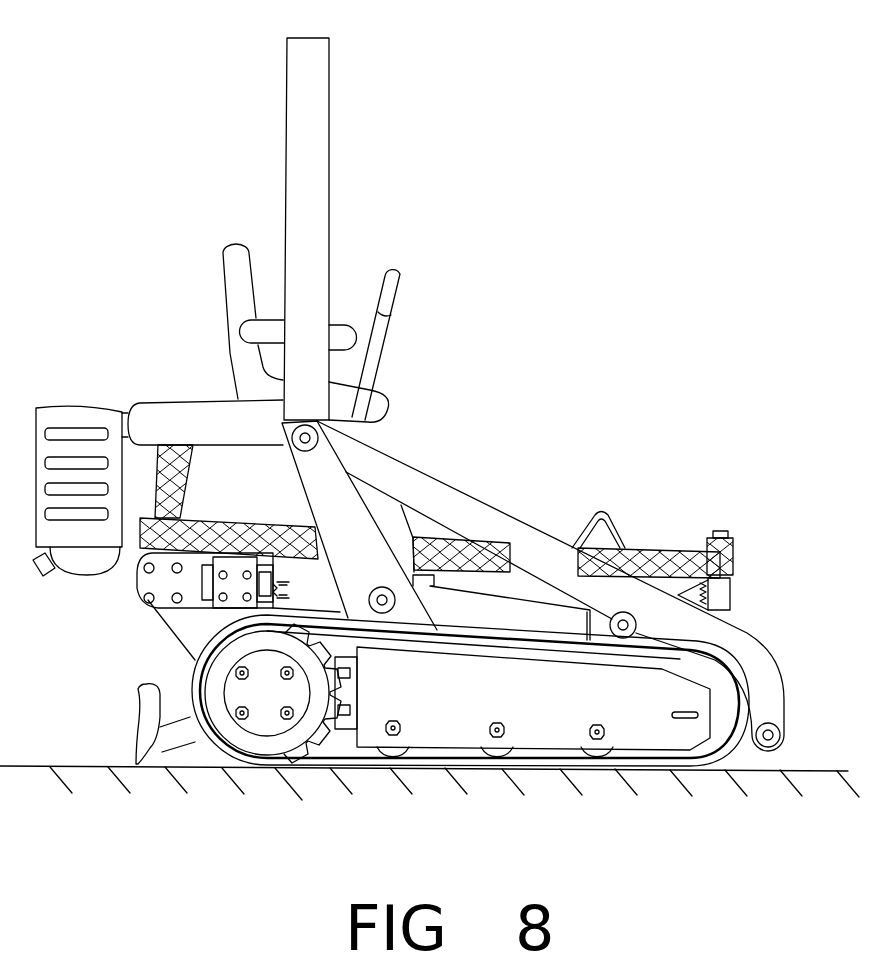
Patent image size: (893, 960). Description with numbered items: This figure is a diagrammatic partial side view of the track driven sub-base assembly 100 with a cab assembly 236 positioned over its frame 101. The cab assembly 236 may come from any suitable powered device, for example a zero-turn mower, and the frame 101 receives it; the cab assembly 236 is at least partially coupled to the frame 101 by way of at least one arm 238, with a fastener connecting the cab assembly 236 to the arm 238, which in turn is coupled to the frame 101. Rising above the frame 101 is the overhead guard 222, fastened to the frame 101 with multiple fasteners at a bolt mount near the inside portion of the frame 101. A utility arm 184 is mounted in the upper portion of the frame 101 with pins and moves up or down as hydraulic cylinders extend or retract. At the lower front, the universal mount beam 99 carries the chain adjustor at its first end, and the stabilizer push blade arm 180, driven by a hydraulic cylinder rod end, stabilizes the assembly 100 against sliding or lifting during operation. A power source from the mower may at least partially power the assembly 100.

The track driven sub-base assembly 100 is at (580, 60).
The overhead guard 222 is at (331, 38).
The cab assembly 236 is at (223, 257).
The arm 238 is at (731, 602).
The utility arm 184 is at (787, 661).
The frame 101 is at (302, 505).
The universal mount beam 99 is at (130, 605).
The stabilizer push blade arm 180 is at (136, 687).